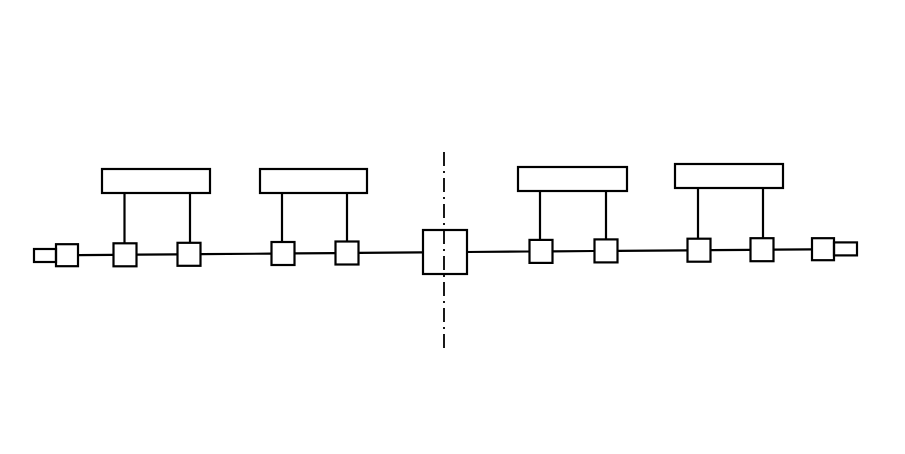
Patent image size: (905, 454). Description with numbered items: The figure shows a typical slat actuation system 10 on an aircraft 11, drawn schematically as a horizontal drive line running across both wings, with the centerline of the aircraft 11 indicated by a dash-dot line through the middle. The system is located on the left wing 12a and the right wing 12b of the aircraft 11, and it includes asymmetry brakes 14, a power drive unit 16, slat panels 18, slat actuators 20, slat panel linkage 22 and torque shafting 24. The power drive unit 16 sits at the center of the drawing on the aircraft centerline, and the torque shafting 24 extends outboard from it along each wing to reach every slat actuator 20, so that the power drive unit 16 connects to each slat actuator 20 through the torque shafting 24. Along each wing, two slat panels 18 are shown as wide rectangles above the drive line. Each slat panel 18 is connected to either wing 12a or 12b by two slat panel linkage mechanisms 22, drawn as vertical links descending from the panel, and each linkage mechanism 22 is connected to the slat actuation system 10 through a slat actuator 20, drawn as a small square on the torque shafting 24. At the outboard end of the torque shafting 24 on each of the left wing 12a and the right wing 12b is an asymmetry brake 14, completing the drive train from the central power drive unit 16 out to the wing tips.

The slat actuation system 10 is at (95, 136).
The aircraft 11 is at (470, 120).
The left wing 12a is at (145, 360).
The right wing 12b is at (577, 362).
The asymmetry brake 14 is at (60, 270).
The power drive unit 16 is at (455, 276).
The slat panel 18 is at (150, 171).
The slat actuator 20 is at (125, 269).
The slat panel linkage 22 is at (121, 231).
The torque shafting 24 is at (243, 256).